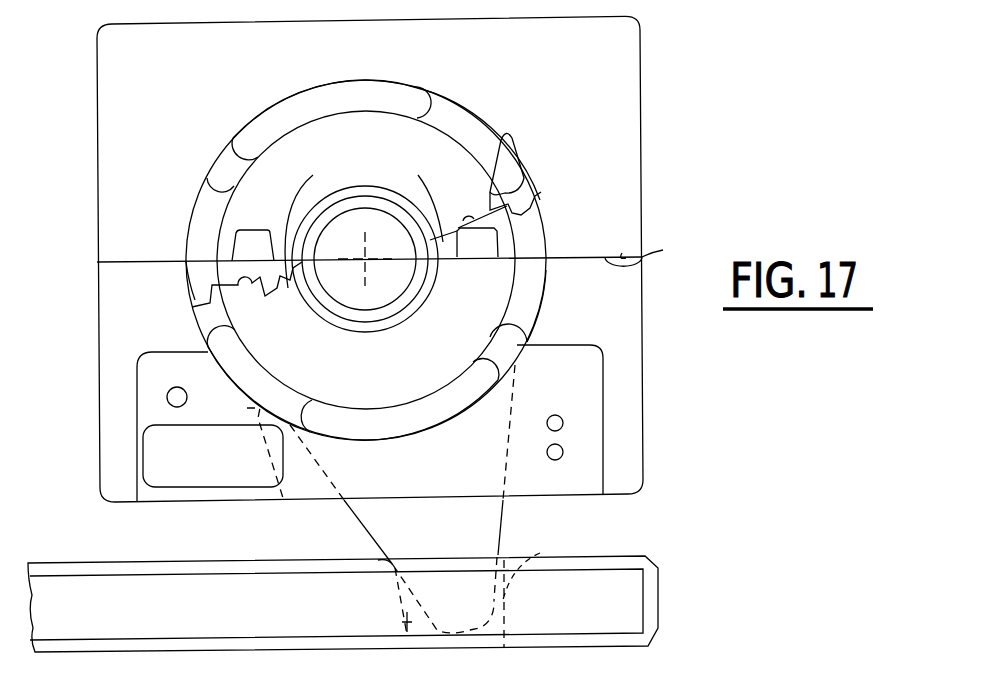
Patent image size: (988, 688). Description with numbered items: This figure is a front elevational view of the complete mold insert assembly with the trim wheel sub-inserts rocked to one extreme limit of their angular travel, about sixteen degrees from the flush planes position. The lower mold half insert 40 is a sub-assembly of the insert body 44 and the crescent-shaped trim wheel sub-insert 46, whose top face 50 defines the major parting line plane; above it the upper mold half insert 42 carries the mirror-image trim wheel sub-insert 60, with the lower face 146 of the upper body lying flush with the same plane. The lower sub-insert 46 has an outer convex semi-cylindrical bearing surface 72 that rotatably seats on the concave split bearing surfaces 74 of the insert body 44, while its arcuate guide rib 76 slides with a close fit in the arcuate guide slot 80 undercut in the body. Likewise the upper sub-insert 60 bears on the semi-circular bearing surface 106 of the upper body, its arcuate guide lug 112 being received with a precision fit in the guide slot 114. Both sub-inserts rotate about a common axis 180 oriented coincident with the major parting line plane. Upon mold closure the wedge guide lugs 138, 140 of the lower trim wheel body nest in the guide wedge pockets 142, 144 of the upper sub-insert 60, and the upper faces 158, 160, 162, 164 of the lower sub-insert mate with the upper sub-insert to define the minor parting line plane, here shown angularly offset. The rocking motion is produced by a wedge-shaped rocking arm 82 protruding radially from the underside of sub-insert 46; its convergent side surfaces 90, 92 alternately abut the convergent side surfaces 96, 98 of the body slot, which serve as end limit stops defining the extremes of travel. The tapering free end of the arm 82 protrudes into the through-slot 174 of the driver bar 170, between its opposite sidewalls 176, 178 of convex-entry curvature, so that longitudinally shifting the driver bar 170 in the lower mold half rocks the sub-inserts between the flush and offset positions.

The lower mold half insert 40 is at (654, 335).
The upper mold half insert 42 is at (670, 80).
The insert body 44 is at (640, 420).
The trim wheel sub-insert 46 is at (209, 322).
The top face 50 is at (622, 253).
The trim wheel sub-insert 60 is at (203, 203).
The bearing surface 72 is at (549, 266).
The split bearing surfaces 74 is at (537, 304).
The guide rib 76 is at (398, 407).
The guide slot 80 is at (262, 366).
The rocking arm 82 is at (494, 533).
The side surface 90 is at (363, 527).
The side surface 92 is at (498, 512).
The side surface 96 is at (240, 408).
The side surface 98 is at (500, 413).
The bearing surface 106 is at (534, 176).
The guide lug 112 is at (363, 92).
The guide slot 114 is at (464, 114).
The wedge guide lug 138 is at (247, 295).
The wedge guide lug 140 is at (508, 133).
The guide wedge pocket 142 is at (252, 227).
The guide wedge pocket 144 is at (460, 217).
The lower face 146 is at (655, 245).
The upper face 158 is at (540, 206).
The upper face 160 is at (407, 196).
The upper face 162 is at (318, 216).
The upper face 164 is at (203, 297).
The driver bar 170 is at (190, 560).
The through-slot 174 is at (508, 603).
The sidewall 176 is at (400, 621).
The sidewall 178 is at (540, 553).
The axis 180 is at (360, 250).